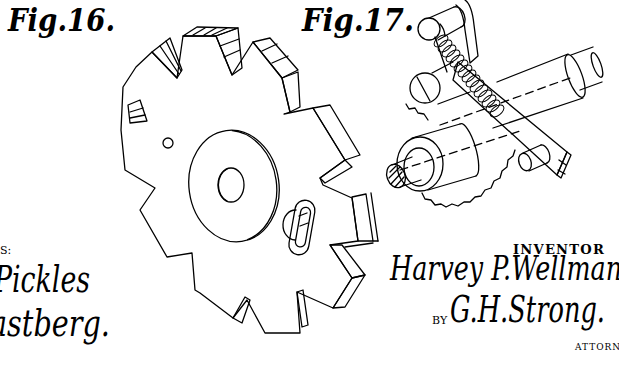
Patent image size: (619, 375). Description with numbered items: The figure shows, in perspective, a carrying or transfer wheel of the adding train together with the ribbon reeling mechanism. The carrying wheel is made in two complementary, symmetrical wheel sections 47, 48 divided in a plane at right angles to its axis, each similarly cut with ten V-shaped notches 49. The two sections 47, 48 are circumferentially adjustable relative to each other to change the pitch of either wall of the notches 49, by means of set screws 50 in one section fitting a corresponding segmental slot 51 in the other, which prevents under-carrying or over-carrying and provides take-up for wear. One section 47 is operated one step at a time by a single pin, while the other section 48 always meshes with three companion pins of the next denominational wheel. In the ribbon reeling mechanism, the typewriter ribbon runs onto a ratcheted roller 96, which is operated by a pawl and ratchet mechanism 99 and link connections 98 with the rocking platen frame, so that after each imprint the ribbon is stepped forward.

In FIG. 16, the wheel section 47 is at (200, 180).
In FIG. 16, the wheel section 48 is at (346, 143).
In FIG. 16, the V-shaped notches 49 is at (130, 112).
In FIG. 16, the set screws 50 is at (294, 236).
In FIG. 16, the segmental slot 51 is at (304, 204).
In FIG. 17, the ratcheted roller 96 is at (522, 87).
In FIG. 17, the link connections 98 is at (569, 164).
In FIG. 17, the pawl and ratchet mechanism 99 is at (479, 68).